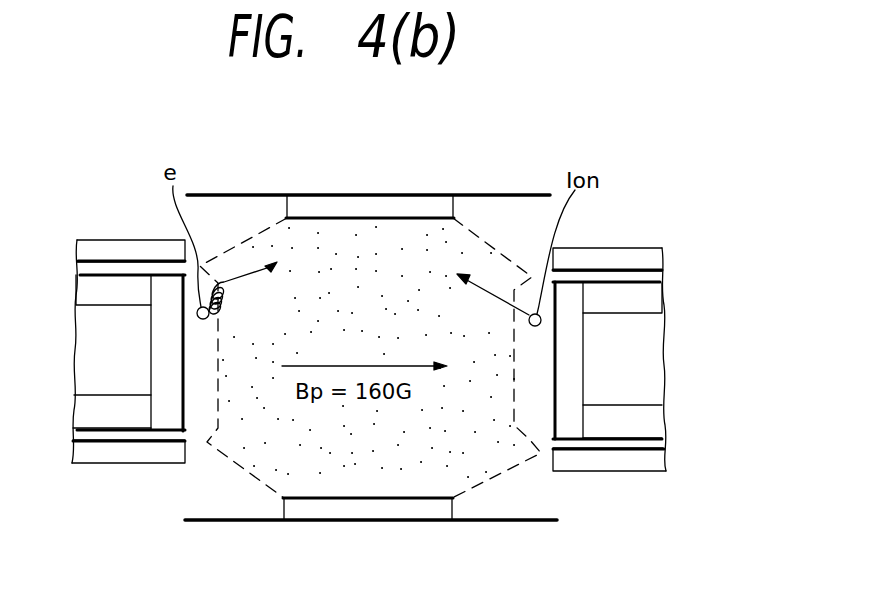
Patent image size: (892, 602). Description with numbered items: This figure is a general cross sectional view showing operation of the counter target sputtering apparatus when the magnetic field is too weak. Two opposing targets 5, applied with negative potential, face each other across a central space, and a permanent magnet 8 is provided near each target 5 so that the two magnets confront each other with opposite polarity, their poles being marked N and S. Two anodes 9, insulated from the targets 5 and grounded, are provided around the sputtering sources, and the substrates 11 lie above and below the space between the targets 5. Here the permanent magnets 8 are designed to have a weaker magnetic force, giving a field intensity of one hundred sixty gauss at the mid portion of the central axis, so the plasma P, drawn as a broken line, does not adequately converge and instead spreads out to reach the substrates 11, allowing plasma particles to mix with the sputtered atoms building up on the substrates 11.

The target 5 is at (172, 420).
The permanent magnet 8 is at (96, 291).
The anode 9 is at (119, 248).
The substrate 11 is at (440, 204).
The plasma P is at (480, 487).